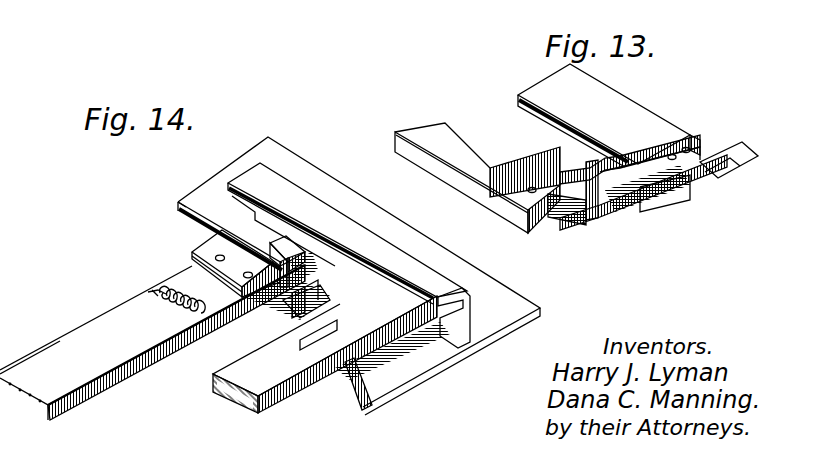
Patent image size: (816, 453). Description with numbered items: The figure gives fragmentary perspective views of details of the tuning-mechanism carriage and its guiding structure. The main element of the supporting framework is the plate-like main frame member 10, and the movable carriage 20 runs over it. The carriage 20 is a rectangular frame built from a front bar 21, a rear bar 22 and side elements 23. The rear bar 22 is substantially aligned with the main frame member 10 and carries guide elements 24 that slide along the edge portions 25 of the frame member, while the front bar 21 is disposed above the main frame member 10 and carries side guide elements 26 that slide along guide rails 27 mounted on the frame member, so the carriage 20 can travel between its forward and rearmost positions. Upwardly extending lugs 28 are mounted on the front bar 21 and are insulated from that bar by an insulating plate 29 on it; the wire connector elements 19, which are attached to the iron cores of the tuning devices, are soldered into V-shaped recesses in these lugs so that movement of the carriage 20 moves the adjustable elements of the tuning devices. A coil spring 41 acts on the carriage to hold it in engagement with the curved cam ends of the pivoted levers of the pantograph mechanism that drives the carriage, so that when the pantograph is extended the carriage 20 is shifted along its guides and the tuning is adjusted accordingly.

In FIG. 14, the main frame member 10 is at (282, 148).
In FIG. 14, the wire connector elements 19 is at (327, 313).
In FIG. 14, the movable carriage 20 is at (120, 351).
In FIG. 13, the movable carriage 20 is at (622, 133).
In FIG. 14, the front bar 21 is at (287, 393).
In FIG. 13, the front bar 21 is at (460, 172).
In FIG. 14, the rear bar 22 is at (90, 312).
In FIG. 13, the rear bar 22 is at (612, 100).
In FIG. 14, the side elements 23 is at (200, 247).
In FIG. 13, the side elements 23 is at (623, 213).
In FIG. 14, the guide elements 24 is at (282, 253).
In FIG. 13, the guide elements 24 is at (733, 188).
In FIG. 14, the edge portions 25 is at (183, 206).
In FIG. 14, the side guide elements 26 is at (443, 300).
In FIG. 13, the side guide elements 26 is at (575, 234).
In FIG. 14, the guide rails 27 is at (347, 230).
In FIG. 14, the upwardly extending lugs 28 is at (313, 350).
In FIG. 14, the insulating plate 29 is at (230, 375).
In FIG. 14, the coil spring 41 is at (183, 296).